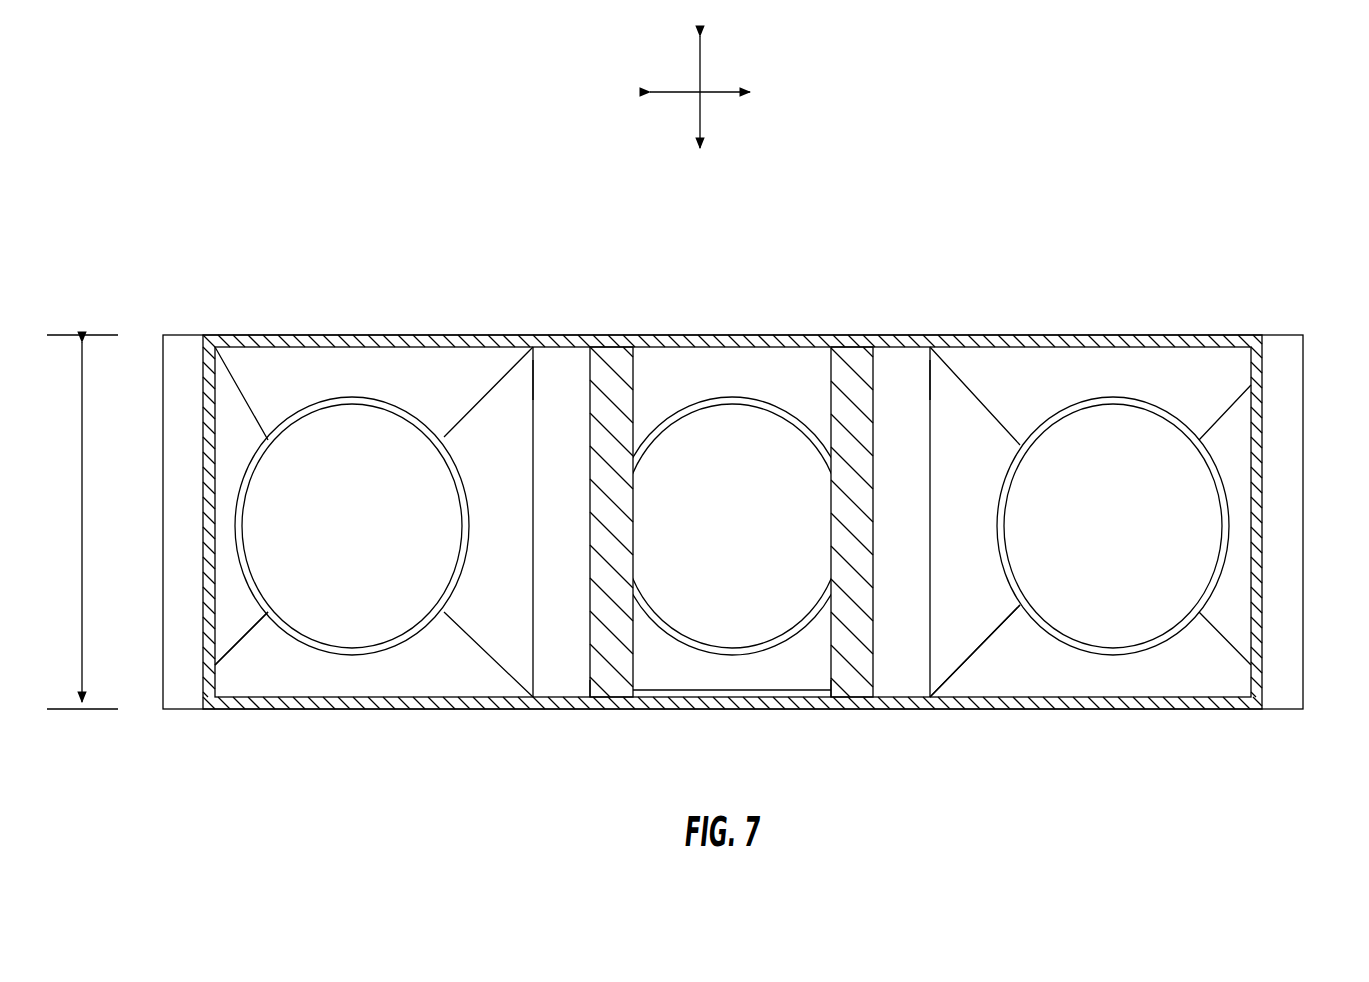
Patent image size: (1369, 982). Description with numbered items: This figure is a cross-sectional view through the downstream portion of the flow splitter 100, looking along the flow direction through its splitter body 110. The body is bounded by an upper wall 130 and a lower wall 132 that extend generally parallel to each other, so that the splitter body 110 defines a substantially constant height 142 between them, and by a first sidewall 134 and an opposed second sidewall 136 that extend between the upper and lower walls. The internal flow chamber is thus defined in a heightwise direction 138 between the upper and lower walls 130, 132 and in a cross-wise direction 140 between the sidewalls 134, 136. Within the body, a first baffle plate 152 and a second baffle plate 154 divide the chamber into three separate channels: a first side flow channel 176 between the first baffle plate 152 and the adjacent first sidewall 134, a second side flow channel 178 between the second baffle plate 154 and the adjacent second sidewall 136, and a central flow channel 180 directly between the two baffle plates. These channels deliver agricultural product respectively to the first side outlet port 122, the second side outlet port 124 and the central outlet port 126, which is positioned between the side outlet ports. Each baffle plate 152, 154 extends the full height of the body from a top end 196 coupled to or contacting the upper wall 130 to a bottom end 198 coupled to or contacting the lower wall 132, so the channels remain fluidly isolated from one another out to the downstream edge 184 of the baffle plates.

The flow splitter 100 is at (236, 128).
The splitter body 110 is at (202, 332).
The first side outlet port 122 is at (370, 546).
The second side outlet port 124 is at (1131, 546).
The central outlet port 126 is at (750, 546).
The upper wall 130 is at (707, 335).
The lower wall 132 is at (708, 710).
The first sidewall 134 is at (184, 526).
The second sidewall 136 is at (1283, 520).
The heightwise direction 138 is at (702, 78).
The cross-wise direction 140 is at (678, 92).
The height 142 is at (82, 478).
The first baffle plate 152 is at (552, 411).
The second baffle plate 154 is at (910, 381).
The first side flow channel 176 is at (268, 672).
The second side flow channel 178 is at (1023, 679).
The central flow channel 180 is at (694, 682).
The downstream edge 184 is at (533, 500).
The top end 196 is at (607, 347).
The bottom end 198 is at (610, 700).